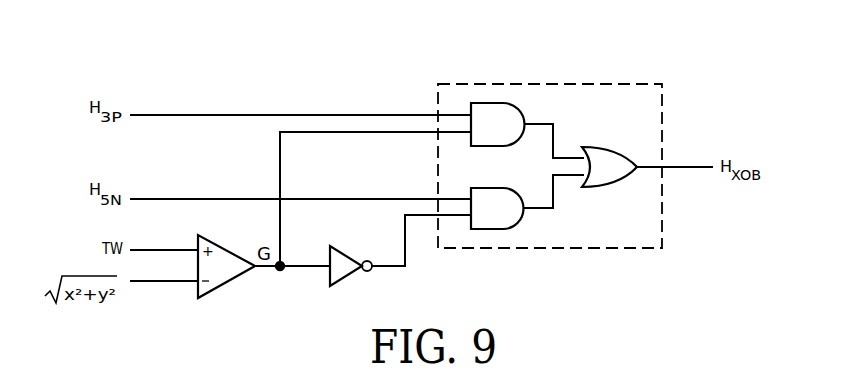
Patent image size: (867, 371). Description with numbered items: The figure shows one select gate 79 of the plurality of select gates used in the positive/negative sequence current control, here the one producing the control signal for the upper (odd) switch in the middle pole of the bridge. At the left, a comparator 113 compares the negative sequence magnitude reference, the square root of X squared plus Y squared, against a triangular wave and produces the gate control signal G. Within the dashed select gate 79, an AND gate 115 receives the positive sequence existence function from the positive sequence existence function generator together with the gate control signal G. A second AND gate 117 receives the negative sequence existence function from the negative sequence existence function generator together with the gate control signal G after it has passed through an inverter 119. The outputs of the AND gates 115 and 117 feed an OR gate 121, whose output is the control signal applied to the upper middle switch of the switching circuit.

The select gate 79 is at (591, 194).
The comparator 113 is at (230, 281).
The AND gate 115 is at (510, 103).
The second AND gate 117 is at (510, 229).
The inverter 119 is at (345, 277).
The OR gate 121 is at (596, 146).